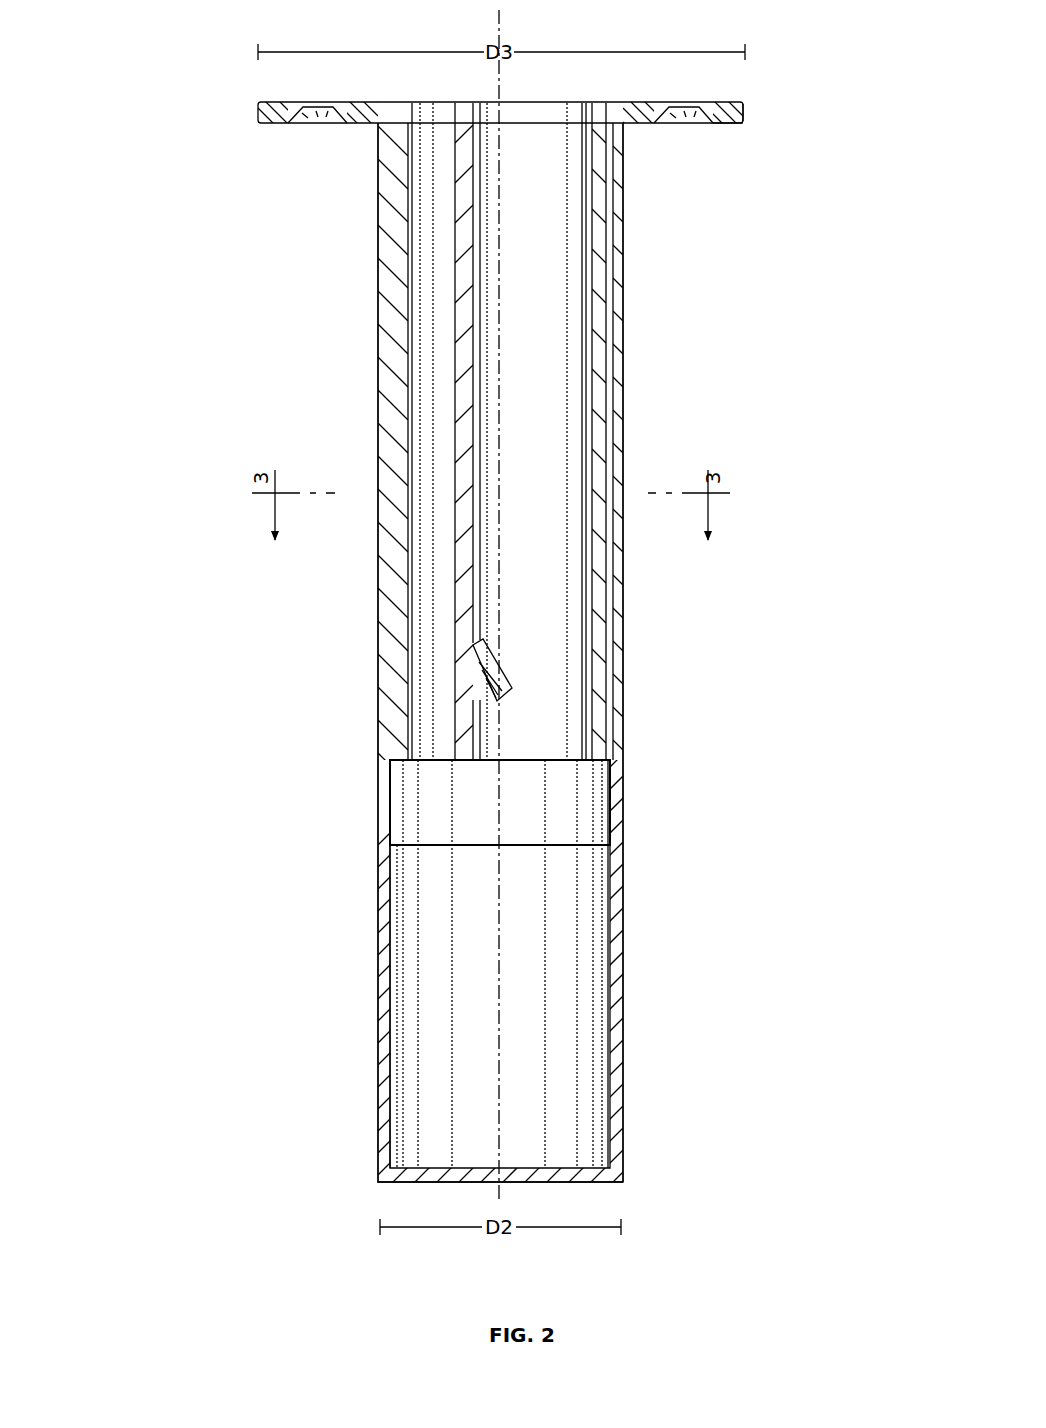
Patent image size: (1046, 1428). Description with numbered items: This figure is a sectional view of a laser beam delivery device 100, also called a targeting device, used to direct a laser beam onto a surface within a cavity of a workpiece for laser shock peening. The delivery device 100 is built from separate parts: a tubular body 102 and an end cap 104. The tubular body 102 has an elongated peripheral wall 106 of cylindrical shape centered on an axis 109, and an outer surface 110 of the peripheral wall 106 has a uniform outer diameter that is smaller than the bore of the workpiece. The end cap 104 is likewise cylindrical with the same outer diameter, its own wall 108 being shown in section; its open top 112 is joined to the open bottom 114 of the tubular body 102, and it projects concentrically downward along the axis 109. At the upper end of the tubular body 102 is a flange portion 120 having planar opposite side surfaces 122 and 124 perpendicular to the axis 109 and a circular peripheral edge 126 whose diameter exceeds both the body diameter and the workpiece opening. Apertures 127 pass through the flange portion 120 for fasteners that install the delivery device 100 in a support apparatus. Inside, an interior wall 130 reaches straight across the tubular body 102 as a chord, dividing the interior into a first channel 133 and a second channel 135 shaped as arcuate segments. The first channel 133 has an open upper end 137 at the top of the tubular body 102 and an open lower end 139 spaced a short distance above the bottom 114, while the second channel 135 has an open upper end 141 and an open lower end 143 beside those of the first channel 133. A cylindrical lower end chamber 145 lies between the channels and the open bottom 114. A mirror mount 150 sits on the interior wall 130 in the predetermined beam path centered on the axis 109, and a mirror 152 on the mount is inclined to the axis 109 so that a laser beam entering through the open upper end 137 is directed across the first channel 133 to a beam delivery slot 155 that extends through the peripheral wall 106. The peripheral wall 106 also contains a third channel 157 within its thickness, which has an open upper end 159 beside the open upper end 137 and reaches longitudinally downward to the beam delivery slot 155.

The delivery device 100 is at (164, 106).
The tubular body 102 is at (382, 266).
The end cap 104 is at (382, 1000).
The peripheral wall 106 is at (388, 318).
The lower housing wall 108 is at (382, 1050).
The axis 109 is at (497, 18).
The outer surface 110 is at (382, 380).
The open top 112 is at (624, 840).
The open bottom 114 is at (384, 850).
The flange portion 120 is at (276, 108).
The side surface 122 is at (728, 100).
The side surface 124 is at (730, 126).
The peripheral edge 126 is at (748, 112).
The apertures 127 is at (318, 126).
The interior wall 130 is at (464, 471).
The first channel 133 is at (570, 324).
The second channel 135 is at (450, 616).
The open upper end 137 is at (572, 103).
The open lower end 139 is at (567, 762).
The open upper end 141 is at (430, 103).
The open lower end 143 is at (423, 760).
The lower end chamber 145 is at (418, 830).
The mirror mount 150 is at (479, 650).
The mirror 152 is at (506, 680).
The beam delivery slot 155 is at (622, 695).
The third channel 157 is at (613, 382).
The open upper end 159 is at (608, 103).